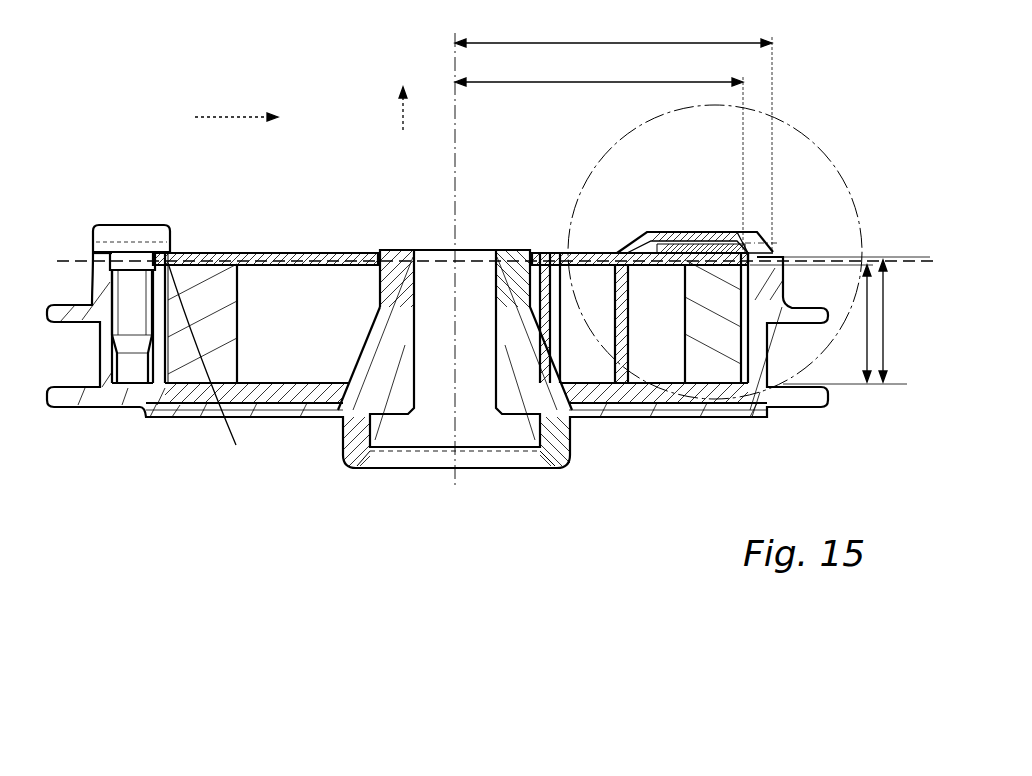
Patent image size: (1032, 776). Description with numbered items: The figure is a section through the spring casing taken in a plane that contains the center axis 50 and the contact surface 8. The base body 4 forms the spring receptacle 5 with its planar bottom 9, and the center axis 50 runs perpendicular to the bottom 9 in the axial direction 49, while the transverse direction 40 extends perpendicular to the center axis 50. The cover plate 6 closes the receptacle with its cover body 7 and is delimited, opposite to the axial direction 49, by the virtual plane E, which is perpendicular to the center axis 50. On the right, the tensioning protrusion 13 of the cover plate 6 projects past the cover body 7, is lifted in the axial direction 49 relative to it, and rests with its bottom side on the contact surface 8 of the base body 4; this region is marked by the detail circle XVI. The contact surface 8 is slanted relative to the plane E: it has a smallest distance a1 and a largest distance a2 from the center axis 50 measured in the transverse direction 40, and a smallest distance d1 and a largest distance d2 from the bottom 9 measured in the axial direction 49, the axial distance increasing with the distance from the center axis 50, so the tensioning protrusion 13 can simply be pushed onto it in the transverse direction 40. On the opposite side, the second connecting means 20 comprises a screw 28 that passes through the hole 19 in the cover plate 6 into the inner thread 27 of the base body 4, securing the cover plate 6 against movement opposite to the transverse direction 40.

The base body 4 is at (627, 399).
The spring receptacle 5 is at (322, 292).
The cover plate 6 is at (703, 244).
The cover body 7 is at (208, 258).
The contact surface 8 is at (743, 238).
The bottom 9 is at (290, 382).
The tensioning protrusion 13 is at (772, 250).
The hole 19 is at (213, 365).
The second connecting means 20 is at (93, 286).
The inner thread 27 is at (115, 308).
The screw 28 is at (107, 238).
The transverse direction 40 is at (212, 115).
The axial direction 49 is at (402, 127).
The center axis 50 is at (455, 57).
The virtual plane E is at (57, 262).
The detail illustration XVI is at (822, 148).
The smallest distance a1 is at (573, 84).
The largest distance a2 is at (622, 43).
The smallest distance d1 is at (866, 340).
The largest distance d2 is at (884, 346).